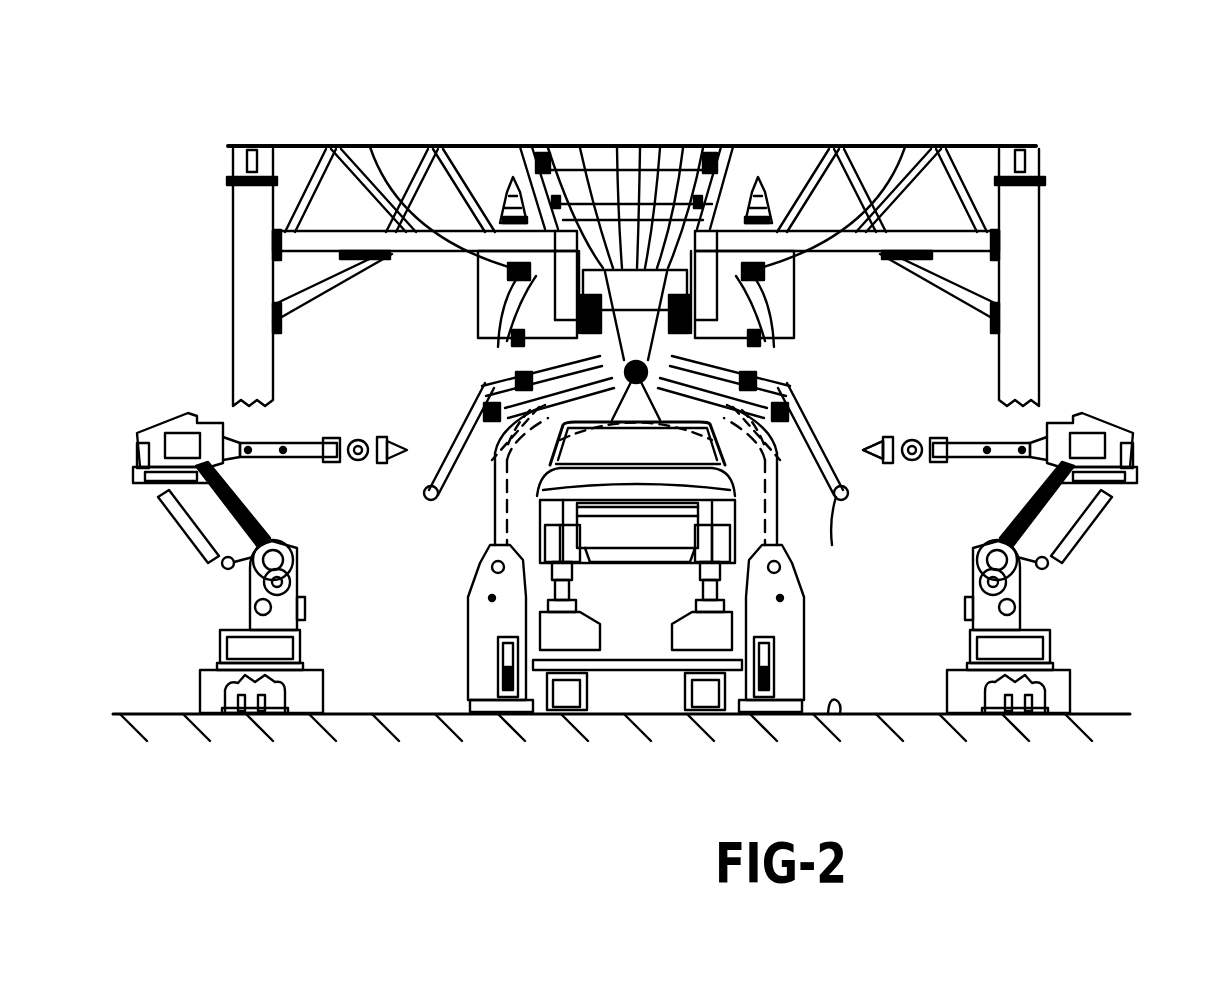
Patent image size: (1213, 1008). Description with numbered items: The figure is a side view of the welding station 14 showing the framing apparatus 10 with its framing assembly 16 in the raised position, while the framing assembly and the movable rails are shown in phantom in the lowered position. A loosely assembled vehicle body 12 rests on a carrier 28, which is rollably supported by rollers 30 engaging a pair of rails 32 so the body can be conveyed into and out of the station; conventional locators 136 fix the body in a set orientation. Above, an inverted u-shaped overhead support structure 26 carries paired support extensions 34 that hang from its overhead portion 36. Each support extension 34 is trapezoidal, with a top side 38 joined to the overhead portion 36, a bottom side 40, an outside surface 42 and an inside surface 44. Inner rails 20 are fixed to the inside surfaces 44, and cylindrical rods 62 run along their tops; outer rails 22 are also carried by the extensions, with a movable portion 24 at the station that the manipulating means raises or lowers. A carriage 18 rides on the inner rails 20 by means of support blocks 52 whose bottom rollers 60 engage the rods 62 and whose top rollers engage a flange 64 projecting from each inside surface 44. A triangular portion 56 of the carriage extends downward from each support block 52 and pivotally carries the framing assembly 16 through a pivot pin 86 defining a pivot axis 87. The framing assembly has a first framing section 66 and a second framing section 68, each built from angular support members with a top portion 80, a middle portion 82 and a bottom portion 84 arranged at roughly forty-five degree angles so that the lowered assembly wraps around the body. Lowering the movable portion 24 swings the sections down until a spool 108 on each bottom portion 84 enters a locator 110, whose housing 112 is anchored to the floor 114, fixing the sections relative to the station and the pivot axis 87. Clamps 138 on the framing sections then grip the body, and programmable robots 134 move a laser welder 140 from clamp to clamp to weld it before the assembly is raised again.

The framing apparatus 10 is at (444, 762).
The vehicle body 12 is at (637, 567).
The welding station 14 is at (893, 698).
The framing assembly 16 is at (826, 411).
The carriage 18 is at (640, 255).
The inner rails 20 is at (583, 160).
The outer rails 22 is at (507, 340).
The movable portion of the outer rails 24 is at (785, 347).
The overhead support structure 26 is at (1040, 267).
The carrier 28 is at (668, 605).
The rollers 30 is at (567, 652).
The rails 32 is at (575, 650).
The support extensions 34 is at (472, 282).
The overhead portion 36 is at (372, 158).
The top side 38 is at (480, 185).
The bottom side 40 is at (477, 363).
The outside surface 42 is at (477, 303).
The inside surface 44 is at (535, 190).
The support blocks 52 is at (617, 262).
The triangular portion 56 is at (558, 436).
The rollers 60 is at (767, 160).
The cylindrical rods 62 is at (773, 310).
The flange 64 is at (714, 200).
The first framing section 66 is at (414, 471).
The second framing section 68 is at (835, 432).
The top portion 80 is at (665, 390).
The middle portion 82 is at (777, 377).
The bottom portion 84 is at (839, 535).
The pivot pin 86 is at (640, 410).
The pivot axis 87 is at (610, 418).
The spool 108 is at (848, 499).
The locators 110 is at (456, 637).
The housing 112 is at (801, 612).
The floor 114 is at (840, 714).
The programmable robots 134 is at (1088, 541).
The locators 136 is at (598, 548).
The clamps 138 is at (797, 405).
The laser welder 140 is at (880, 441).